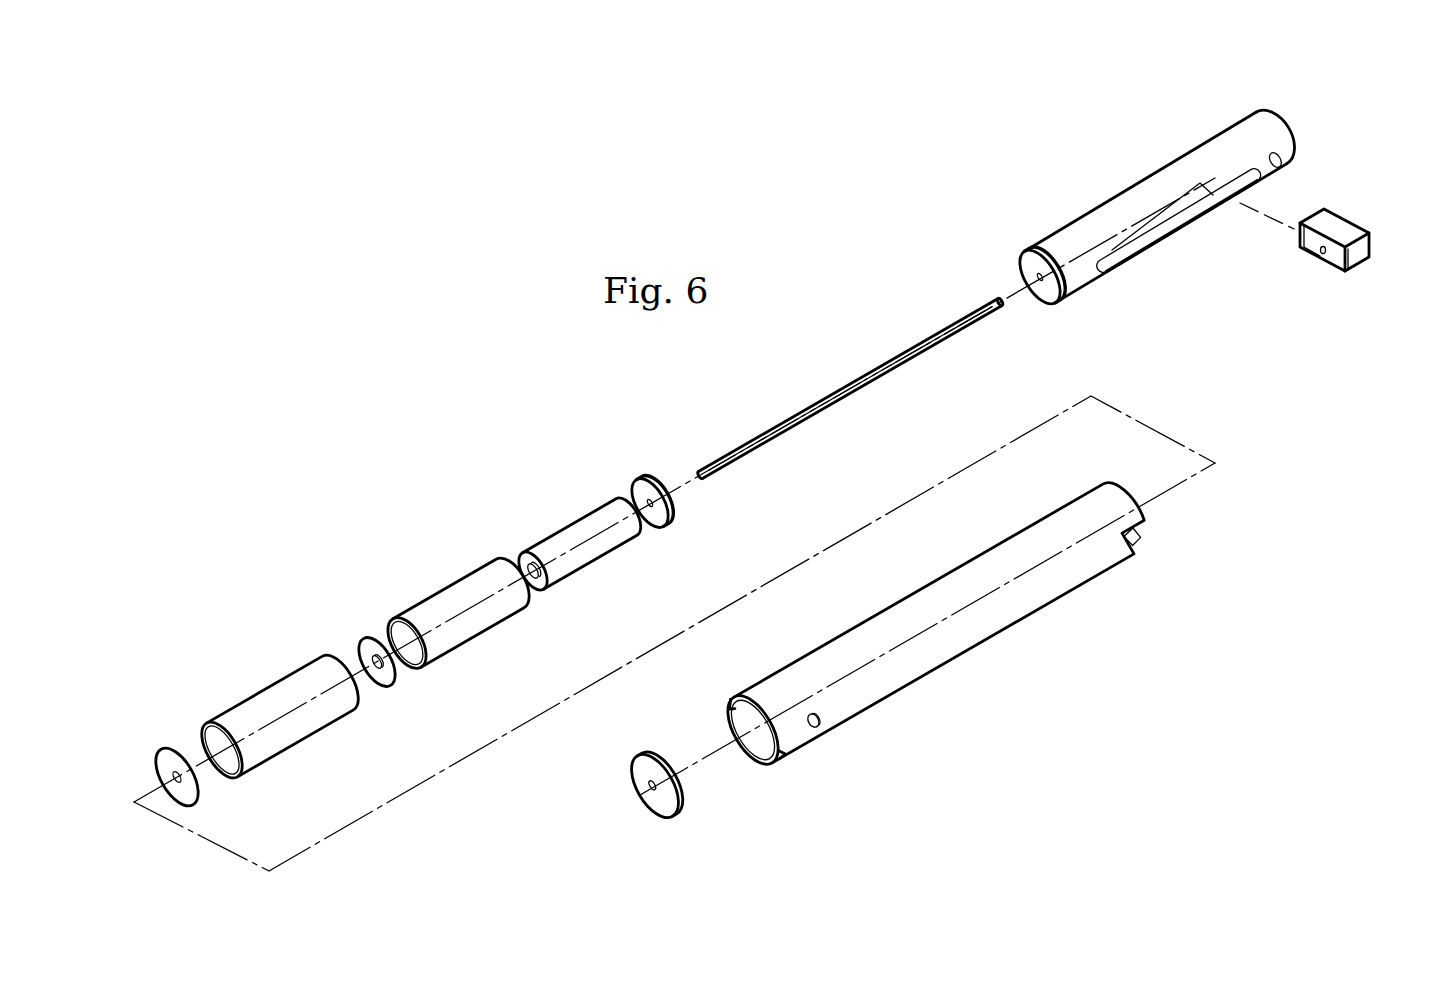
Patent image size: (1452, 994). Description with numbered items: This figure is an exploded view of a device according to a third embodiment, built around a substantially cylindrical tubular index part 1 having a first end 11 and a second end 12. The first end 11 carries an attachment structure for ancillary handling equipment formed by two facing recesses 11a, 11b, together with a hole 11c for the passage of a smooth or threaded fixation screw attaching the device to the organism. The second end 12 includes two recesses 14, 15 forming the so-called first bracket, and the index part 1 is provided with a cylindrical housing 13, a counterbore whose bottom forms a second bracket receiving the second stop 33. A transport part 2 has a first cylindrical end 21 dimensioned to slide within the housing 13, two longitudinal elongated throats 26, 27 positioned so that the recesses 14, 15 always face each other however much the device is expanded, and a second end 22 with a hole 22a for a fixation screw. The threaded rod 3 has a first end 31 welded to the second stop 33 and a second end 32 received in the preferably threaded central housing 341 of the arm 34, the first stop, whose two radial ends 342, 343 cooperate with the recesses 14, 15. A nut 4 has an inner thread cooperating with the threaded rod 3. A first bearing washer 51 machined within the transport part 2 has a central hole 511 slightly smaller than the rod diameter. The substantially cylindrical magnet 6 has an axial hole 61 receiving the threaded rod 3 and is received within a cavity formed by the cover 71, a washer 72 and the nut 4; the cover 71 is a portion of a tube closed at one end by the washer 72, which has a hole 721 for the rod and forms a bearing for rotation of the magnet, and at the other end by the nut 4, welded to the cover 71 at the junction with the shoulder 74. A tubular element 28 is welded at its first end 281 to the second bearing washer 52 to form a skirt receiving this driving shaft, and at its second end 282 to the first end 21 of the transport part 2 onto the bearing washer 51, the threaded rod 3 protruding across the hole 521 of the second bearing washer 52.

The index part 1 is at (940, 652).
The first end of the index part 11 is at (756, 759).
The recess 11a is at (784, 742).
The recess 11b is at (728, 712).
The hole 11c is at (817, 732).
The second end of the index part 12 is at (1085, 590).
The cylindrical housing 13 is at (751, 744).
The recess 14 is at (1180, 550).
The recess 15 is at (1132, 546).
The transport part 2 is at (1150, 209).
The first cylindrical end of the transport part 21 is at (1085, 273).
The second end of the transport part 22 is at (1306, 120).
The hole 22a is at (1280, 164).
The longitudinal elongated throat 26 is at (1178, 224).
The longitudinal elongated throat 27 is at (1148, 240).
The tubular element 28 is at (305, 724).
The first end of the tubular element 281 is at (252, 755).
The second end of the tubular element 282 is at (350, 702).
The threaded rod 3 is at (850, 403).
The first end of the threaded rod 31 is at (712, 480).
The second end of the threaded rod 32 is at (998, 302).
The second stop 33 is at (654, 795).
The arm 34 is at (1342, 240).
The housing 341 is at (1320, 253).
The radial end of the arm 342 is at (1320, 215).
The radial end of the arm 343 is at (1364, 260).
The nut 4 is at (673, 494).
The first bearing washer 51 is at (1015, 277).
The hole 511 is at (1041, 282).
The second bearing washer 52 is at (177, 770).
The hole 521 is at (181, 787).
The magnet 6 is at (580, 554).
The hole 61 is at (532, 580).
The cover 71 is at (451, 600).
The washer 72 is at (380, 663).
The hole 721 is at (386, 674).
The shoulder of the nut 74 is at (680, 509).